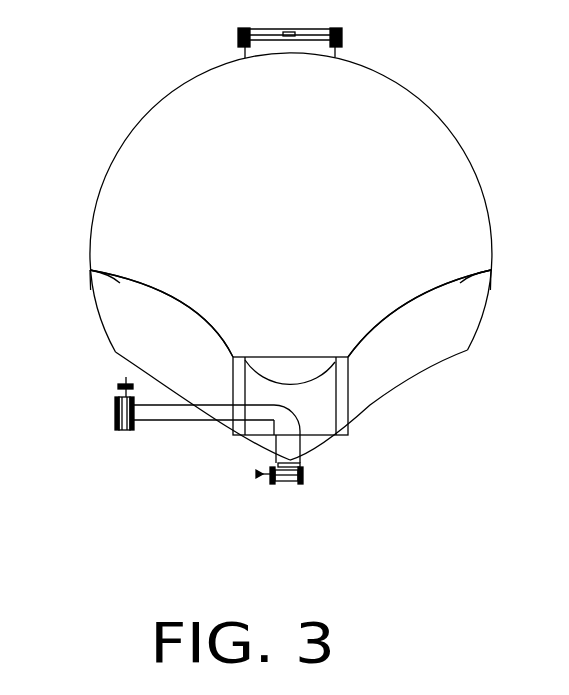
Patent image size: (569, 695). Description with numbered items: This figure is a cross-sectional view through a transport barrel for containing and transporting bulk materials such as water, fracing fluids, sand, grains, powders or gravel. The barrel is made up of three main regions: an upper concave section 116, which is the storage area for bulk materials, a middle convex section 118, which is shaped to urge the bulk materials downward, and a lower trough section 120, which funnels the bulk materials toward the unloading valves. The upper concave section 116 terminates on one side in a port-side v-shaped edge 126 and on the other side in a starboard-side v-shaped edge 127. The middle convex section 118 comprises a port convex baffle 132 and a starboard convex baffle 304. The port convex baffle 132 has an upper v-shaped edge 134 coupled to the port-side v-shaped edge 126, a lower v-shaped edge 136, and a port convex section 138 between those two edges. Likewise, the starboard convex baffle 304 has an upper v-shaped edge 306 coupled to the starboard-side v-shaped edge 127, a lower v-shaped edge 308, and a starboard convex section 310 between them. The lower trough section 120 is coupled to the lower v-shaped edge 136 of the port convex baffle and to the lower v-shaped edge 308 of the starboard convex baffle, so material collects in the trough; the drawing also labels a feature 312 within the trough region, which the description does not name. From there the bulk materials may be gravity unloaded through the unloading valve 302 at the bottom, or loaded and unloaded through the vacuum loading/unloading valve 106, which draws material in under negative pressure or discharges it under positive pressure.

The vacuum loading/unloading valve 106 is at (126, 380).
The upper concave section 116 is at (376, 72).
The middle convex section 118 is at (456, 344).
The lower trough section 120 is at (263, 440).
The port-side v-shaped edge 126 is at (491, 270).
The starboard-side v-shaped edge 127 is at (90, 270).
The port convex baffle 132 is at (430, 290).
The upper v-shaped edge 134 is at (491, 270).
The lower v-shaped edge 136 is at (342, 357).
The port convex section 138 is at (393, 311).
The unloading valve 302 is at (306, 472).
The starboard convex baffle 304 is at (152, 287).
The upper v-shaped edge 306 is at (90, 270).
The lower v-shaped edge 308 is at (240, 357).
The starboard convex section 310 is at (191, 309).
The dish insert 312 is at (290, 384).